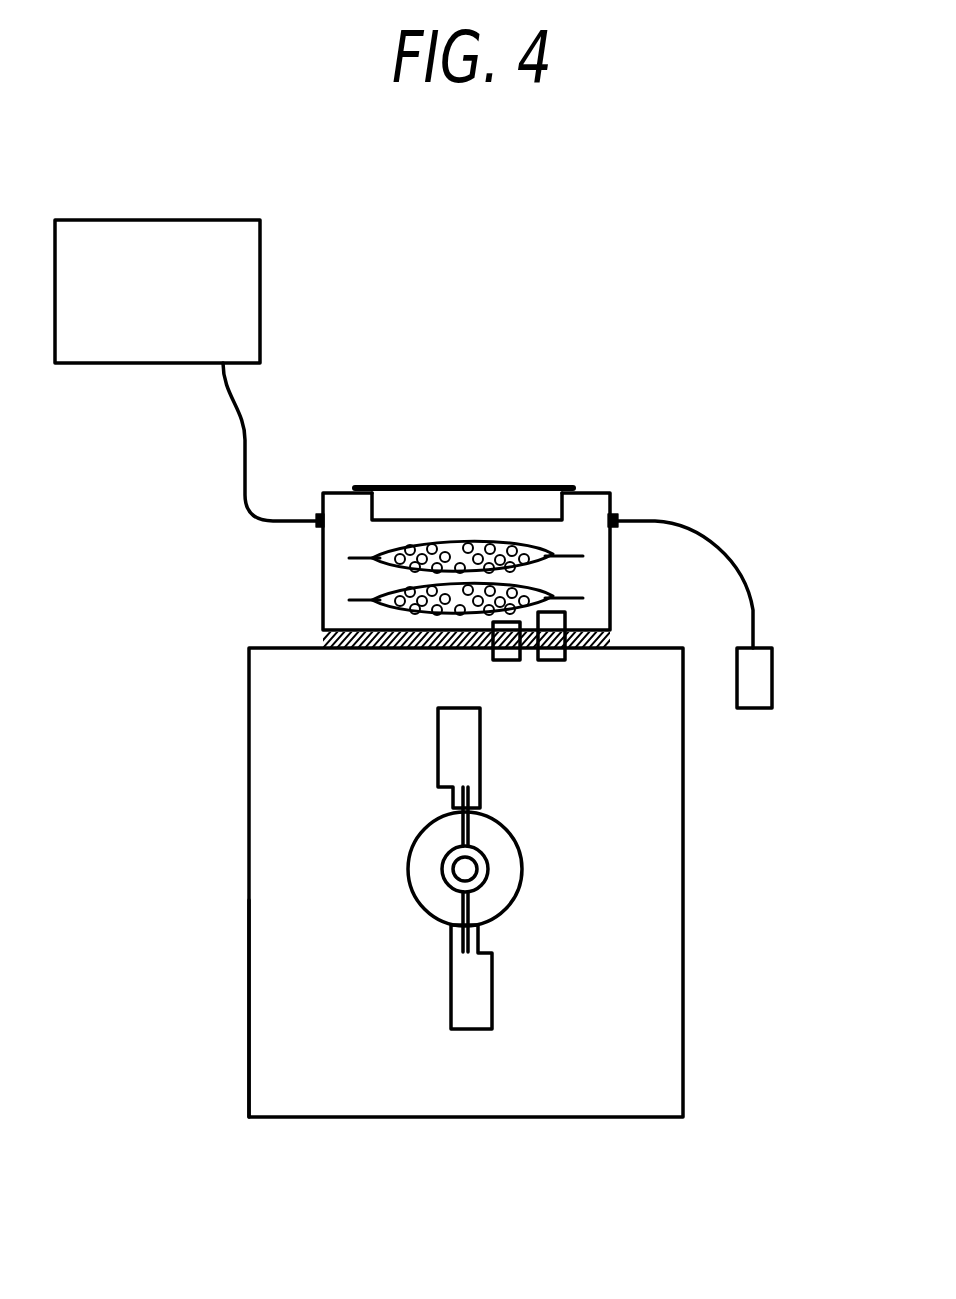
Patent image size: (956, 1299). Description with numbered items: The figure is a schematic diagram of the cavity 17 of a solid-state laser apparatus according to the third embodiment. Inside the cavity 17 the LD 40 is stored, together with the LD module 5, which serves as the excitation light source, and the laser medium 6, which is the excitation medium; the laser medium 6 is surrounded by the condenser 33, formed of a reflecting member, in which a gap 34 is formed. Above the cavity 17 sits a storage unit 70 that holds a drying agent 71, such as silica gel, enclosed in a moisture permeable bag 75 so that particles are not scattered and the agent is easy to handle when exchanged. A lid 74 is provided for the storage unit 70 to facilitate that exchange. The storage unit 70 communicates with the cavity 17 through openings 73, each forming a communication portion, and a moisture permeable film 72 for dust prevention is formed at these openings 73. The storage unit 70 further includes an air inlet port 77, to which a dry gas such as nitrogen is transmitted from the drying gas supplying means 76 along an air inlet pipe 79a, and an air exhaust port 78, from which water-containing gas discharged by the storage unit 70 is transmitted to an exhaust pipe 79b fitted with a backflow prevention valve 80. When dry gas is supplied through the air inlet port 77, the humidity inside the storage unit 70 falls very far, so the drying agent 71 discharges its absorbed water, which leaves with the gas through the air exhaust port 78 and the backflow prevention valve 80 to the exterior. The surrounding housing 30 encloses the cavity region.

The drying gas supplying means 76 is at (260, 291).
The air inlet pipe 79a is at (244, 463).
The air inlet port 77 is at (318, 516).
The storage unit 70 is at (344, 491).
The lid 74 is at (458, 487).
The drying agent 71 is at (378, 573).
The bag 75 is at (553, 552).
The air exhaust port 78 is at (620, 518).
The exhaust pipe 79b is at (720, 541).
The backflow prevention valve 80 is at (772, 678).
The opening 73 is at (608, 612).
The moisture permeable film 72 is at (323, 634).
The housing 30 is at (683, 762).
The cavity 17 is at (249, 1007).
The LD 40 is at (455, 795).
The condenser 33 is at (522, 863).
The laser medium 6 is at (443, 861).
The gap 34 is at (472, 900).
The LD module 5 is at (470, 1028).